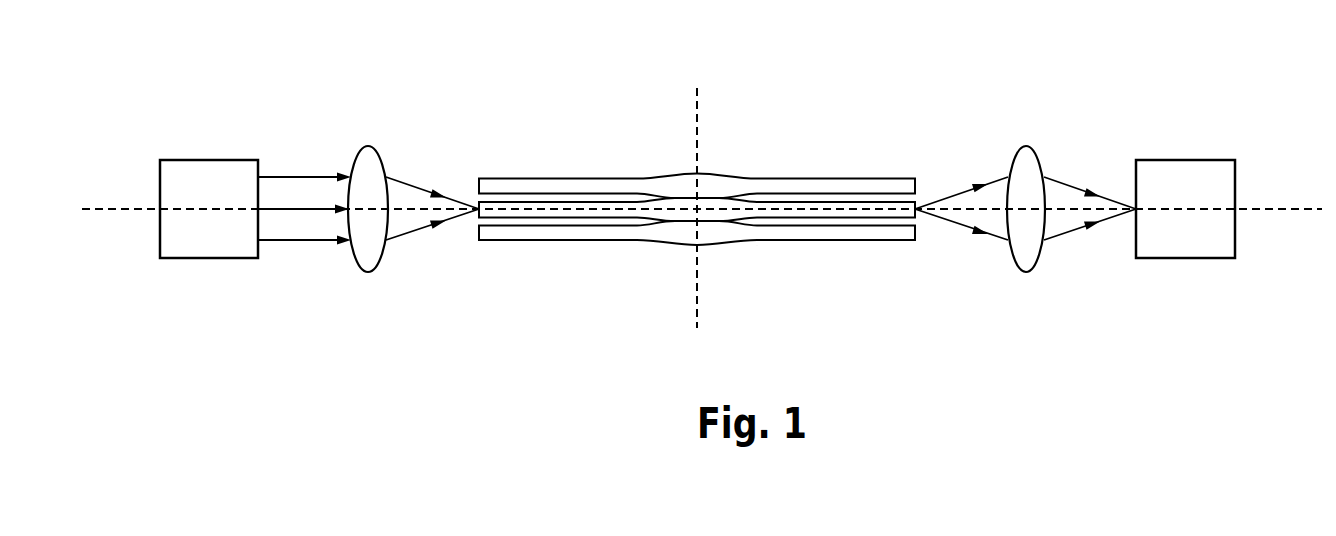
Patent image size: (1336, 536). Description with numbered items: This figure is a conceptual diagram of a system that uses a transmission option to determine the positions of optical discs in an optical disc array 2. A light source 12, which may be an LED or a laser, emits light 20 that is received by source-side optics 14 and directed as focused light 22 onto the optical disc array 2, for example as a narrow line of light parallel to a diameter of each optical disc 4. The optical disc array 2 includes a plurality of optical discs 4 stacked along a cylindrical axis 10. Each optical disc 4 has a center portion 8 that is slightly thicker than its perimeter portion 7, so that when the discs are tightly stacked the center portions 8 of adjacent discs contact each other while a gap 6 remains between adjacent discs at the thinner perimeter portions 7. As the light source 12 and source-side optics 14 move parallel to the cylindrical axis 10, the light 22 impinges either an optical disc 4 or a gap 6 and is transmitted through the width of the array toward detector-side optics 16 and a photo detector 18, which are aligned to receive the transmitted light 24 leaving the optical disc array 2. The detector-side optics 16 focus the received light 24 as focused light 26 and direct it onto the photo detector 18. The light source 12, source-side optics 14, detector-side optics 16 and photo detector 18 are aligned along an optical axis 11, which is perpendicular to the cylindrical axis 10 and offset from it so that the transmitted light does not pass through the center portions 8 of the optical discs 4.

The optical disc array 2 is at (612, 142).
The optical disc 4 is at (487, 242).
The gap 6 is at (483, 220).
The perimeter portion 7 is at (872, 241).
The center portion 8 is at (675, 244).
The cylindrical axis 10 is at (698, 118).
The optical axis 11 is at (1270, 208).
The light source 12 is at (176, 158).
The source-side optics 14 is at (385, 163).
The detector-side optics 16 is at (1043, 152).
The photo detector 18 is at (1187, 160).
The light 20 is at (300, 176).
The focused light 22 is at (432, 181).
The transmitted light 24 is at (961, 192).
The focused light 26 is at (1113, 200).